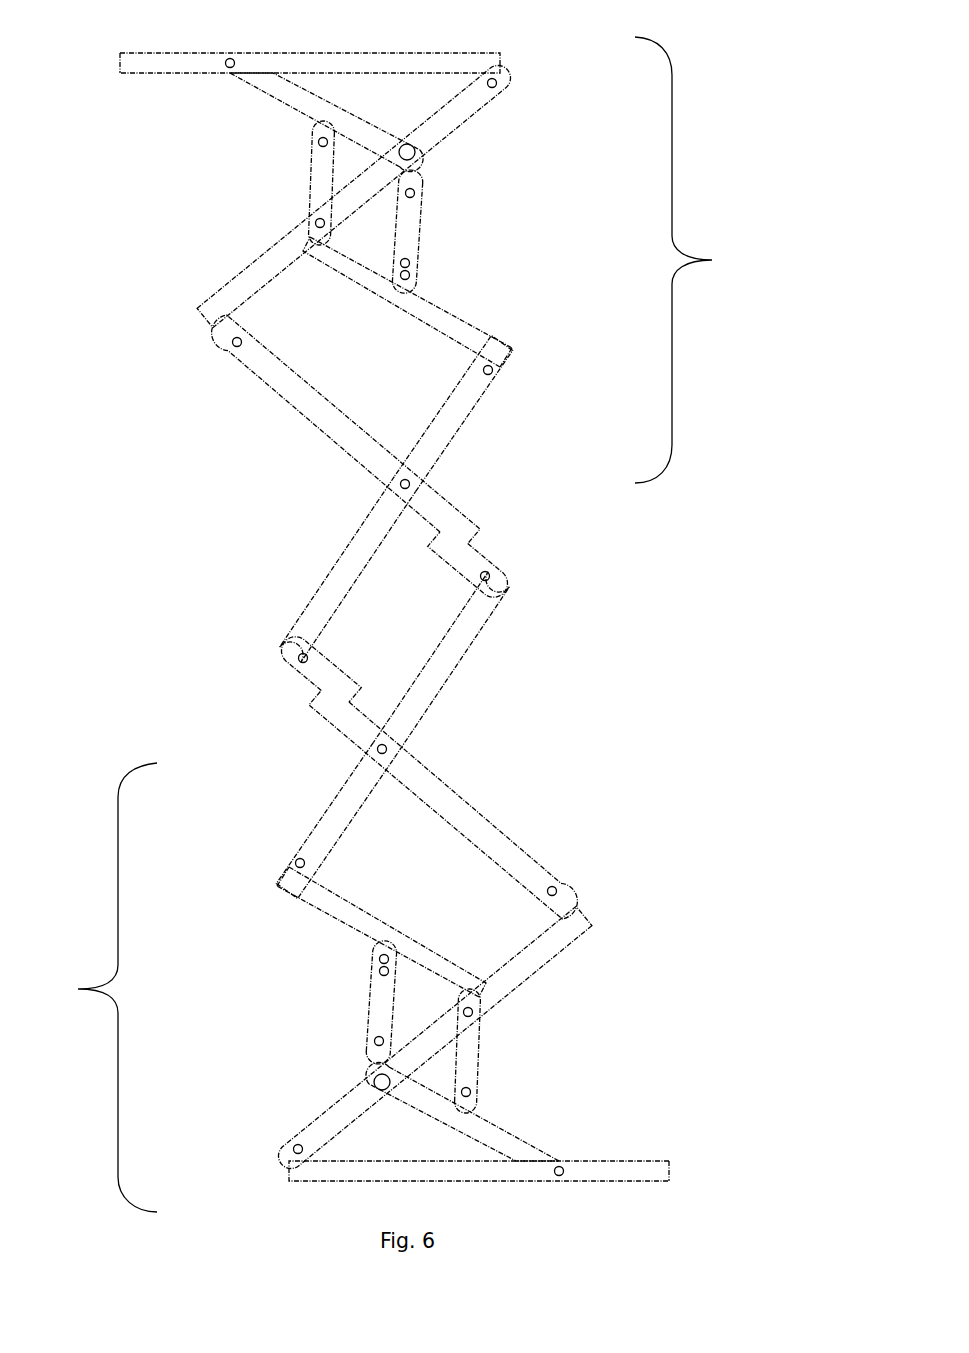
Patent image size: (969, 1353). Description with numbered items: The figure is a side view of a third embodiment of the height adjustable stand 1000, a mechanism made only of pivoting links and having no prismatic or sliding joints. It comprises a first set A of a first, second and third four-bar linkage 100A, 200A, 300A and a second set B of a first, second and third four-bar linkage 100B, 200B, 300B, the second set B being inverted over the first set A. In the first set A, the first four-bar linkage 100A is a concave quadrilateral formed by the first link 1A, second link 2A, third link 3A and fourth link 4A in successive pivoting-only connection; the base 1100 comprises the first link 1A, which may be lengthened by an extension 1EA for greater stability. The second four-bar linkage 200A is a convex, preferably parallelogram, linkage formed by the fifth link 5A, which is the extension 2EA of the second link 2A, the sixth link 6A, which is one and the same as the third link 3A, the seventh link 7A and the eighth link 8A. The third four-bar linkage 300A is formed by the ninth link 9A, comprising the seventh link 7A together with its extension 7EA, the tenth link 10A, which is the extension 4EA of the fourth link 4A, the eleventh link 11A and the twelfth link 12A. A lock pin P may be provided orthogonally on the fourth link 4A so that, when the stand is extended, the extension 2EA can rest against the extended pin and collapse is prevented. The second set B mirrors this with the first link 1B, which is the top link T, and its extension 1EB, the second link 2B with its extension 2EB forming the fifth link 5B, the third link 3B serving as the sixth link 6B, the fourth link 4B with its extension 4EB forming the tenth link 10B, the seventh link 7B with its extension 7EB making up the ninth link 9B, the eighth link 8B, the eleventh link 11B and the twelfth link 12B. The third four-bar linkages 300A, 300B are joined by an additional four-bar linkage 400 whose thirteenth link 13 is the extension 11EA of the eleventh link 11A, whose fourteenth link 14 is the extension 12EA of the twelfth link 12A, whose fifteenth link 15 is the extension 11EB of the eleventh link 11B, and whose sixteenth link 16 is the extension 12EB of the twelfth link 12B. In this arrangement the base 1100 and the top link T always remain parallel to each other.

The height adjustable stand 1000 is at (612, 742).
The base 1100 is at (470, 1190).
The first link of the first set 1A is at (388, 1165).
The extension of the first link of the first set 1EA is at (632, 1167).
The first link of the second set 1B is at (320, 38).
The top link T is at (423, 68).
The extension of the first link of the second set 1EB is at (188, 66).
The second link of the first set 2A is at (500, 1137).
The extension of the second link of the first set 2EA is at (409, 1109).
The fifth link of the first set 5A is at (413, 1087).
The second link of the second set 2B is at (292, 97).
The extension of the second link of the second set 2EB is at (382, 129).
The fifth link of the second set 5B is at (362, 137).
The third link of the first set 3A is at (508, 1051).
The sixth link of the first set 6A is at (472, 1057).
The third link of the second set 3B is at (262, 183).
The sixth link of the second set 6B is at (327, 171).
The fourth link of the first set 4A is at (320, 1090).
The lock pin P is at (353, 1105).
The fourth link of the second set 4B is at (427, 141).
The extension of the fourth link of the first set 4EA is at (466, 1037).
The tenth link of the first set 10A is at (525, 970).
The extension of the fourth link of the second set 4EB is at (310, 196).
The tenth link of the second set 10B is at (255, 282).
The seventh link of the first set 7A is at (447, 972).
The extension of the seventh link of the first set 7EA is at (347, 910).
The seventh link of the second set 7B is at (360, 263).
The extension of the seventh link of the second set 7EB is at (447, 333).
The eighth link of the first set 8A is at (380, 1017).
The eighth link of the second set 8B is at (410, 240).
The ninth link of the first set 9A is at (378, 932).
The ninth link of the second set 9B is at (427, 307).
The eleventh link of the first set 11A is at (455, 810).
The extension of the eleventh link of the first set 11EA is at (269, 692).
The thirteenth link 13 is at (340, 712).
The eleventh link of the second set 11B is at (322, 405).
The extension of the eleventh link of the second set 11EB is at (533, 546).
The fifteenth link 15 is at (452, 514).
The twelfth link of the first set 12A is at (345, 805).
The extension of the twelfth link of the first set 12EA is at (478, 665).
The fourteenth link 14 is at (445, 665).
The twelfth link of the second set 12B is at (462, 415).
The extension of the twelfth link of the second set 12EB is at (297, 570).
The sixteenth link 16 is at (345, 563).
The first four-bar linkage of the first set 100A is at (340, 1175).
The first four-bar linkage of the second set 100B is at (460, 124).
The second four-bar linkage of the first set 200A is at (368, 989).
The second four-bar linkage of the second set 200B is at (420, 212).
The third four-bar linkage of the first set 300A is at (540, 862).
The third four-bar linkage of the second set 300B is at (505, 348).
The additional four-bar linkage 400 is at (490, 555).
The first set A is at (104, 987).
The second set B is at (685, 260).